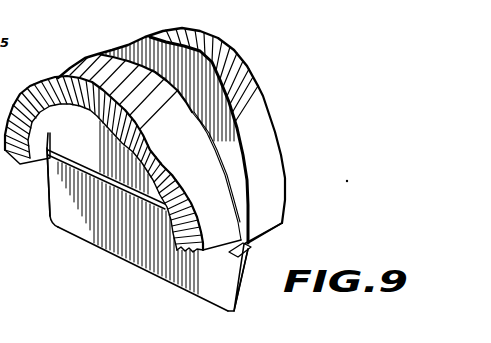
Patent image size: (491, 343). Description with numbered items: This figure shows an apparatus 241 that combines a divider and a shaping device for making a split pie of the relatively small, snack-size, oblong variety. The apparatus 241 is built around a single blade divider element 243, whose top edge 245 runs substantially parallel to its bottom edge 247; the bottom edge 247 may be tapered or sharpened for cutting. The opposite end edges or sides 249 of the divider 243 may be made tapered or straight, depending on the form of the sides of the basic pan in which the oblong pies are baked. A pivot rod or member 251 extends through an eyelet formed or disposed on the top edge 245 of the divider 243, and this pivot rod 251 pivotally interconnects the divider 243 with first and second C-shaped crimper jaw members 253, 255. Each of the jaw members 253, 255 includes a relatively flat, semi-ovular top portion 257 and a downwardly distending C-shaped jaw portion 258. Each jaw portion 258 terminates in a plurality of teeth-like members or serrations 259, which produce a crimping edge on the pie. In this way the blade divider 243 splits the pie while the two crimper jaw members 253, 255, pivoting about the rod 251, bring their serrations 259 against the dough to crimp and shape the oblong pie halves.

The apparatus 241 is at (274, 43).
The single blade divider element 243 is at (118, 230).
The top edge 245 is at (236, 252).
The bottom edge 247 is at (183, 289).
The end edges 249 is at (45, 204).
The pivot rod 251 is at (246, 248).
The first C-shaped crimper jaw member 253 is at (131, 140).
The second C-shaped crimper jaw member 255 is at (248, 67).
The top portion 257 is at (190, 78).
The C-shaped jaw portion 258 is at (272, 143).
The serrations 259 is at (141, 198).